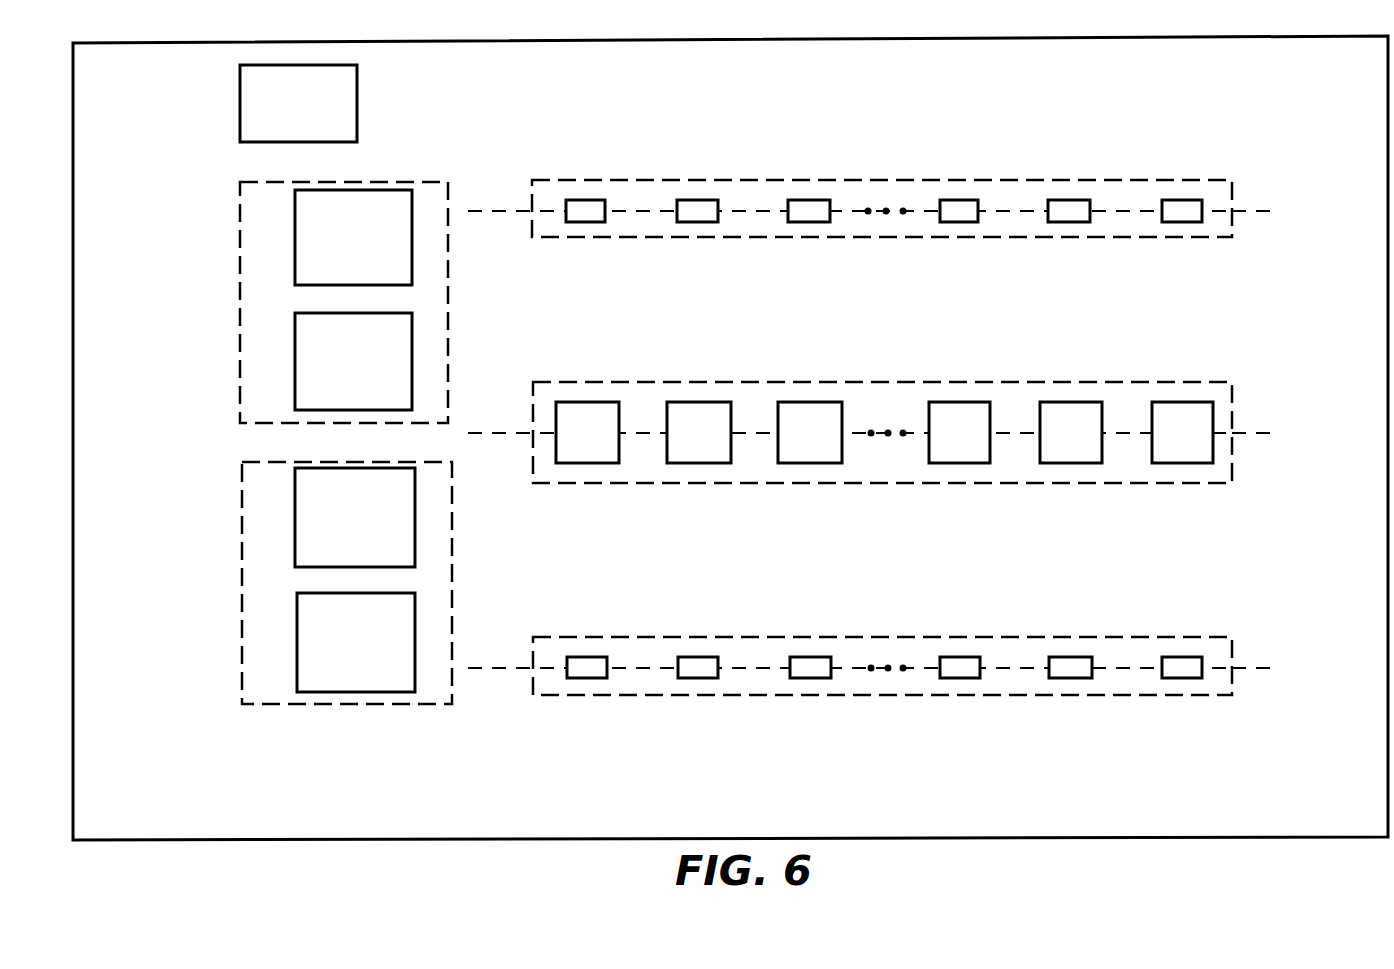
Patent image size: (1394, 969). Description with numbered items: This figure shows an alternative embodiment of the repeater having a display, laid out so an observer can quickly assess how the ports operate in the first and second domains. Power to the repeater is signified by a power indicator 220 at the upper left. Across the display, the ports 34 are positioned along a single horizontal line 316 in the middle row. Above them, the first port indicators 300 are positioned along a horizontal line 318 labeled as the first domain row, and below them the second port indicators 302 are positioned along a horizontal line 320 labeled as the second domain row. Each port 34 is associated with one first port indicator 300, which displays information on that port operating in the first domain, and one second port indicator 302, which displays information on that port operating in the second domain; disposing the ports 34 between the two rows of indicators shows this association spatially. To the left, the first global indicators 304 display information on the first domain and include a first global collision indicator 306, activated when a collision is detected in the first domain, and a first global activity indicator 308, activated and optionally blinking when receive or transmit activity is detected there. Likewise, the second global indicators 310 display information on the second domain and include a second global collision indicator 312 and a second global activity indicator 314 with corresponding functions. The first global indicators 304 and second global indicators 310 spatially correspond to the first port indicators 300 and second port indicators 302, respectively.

The power indicator 220 is at (240, 106).
The first port indicators 300 is at (1150, 178).
The second port indicators 302 is at (1000, 695).
The first global indicators 304 is at (271, 302).
The first global collision indicator 306 is at (295, 247).
The first global activity indicator 308 is at (331, 361).
The second global indicators 310 is at (268, 583).
The second global collision indicator 312 is at (297, 528).
The second global activity indicator 314 is at (333, 642).
The horizontal line 316 is at (1250, 429).
The horizontal line 318 is at (1248, 207).
The horizontal line 320 is at (1243, 664).
The ports 34 is at (1115, 485).